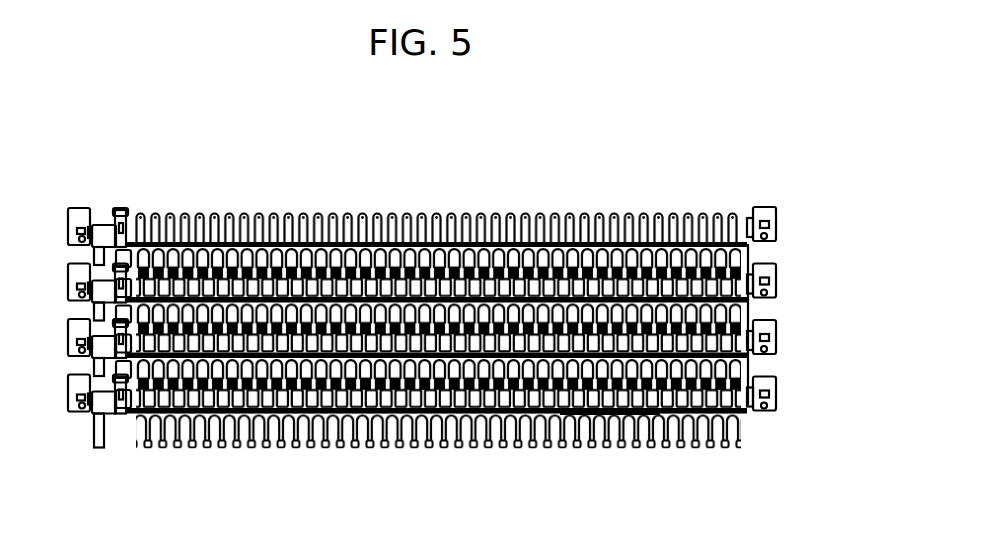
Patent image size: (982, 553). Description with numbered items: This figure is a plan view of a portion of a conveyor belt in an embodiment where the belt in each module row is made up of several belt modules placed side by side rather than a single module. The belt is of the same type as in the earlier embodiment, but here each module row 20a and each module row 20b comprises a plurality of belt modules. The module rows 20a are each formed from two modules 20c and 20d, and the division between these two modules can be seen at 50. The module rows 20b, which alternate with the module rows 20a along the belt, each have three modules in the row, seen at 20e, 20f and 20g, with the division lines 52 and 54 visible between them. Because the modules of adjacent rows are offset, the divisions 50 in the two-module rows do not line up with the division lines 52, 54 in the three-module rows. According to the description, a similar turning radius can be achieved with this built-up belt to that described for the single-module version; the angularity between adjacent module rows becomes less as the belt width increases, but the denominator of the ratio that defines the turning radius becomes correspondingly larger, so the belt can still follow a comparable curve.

The module row 20a is at (796, 229).
The module row 20b is at (779, 280).
The belt module 20c is at (338, 196).
The belt module 20d is at (600, 203).
The belt module 20e is at (192, 457).
The belt module 20f is at (436, 470).
The belt module 20g is at (653, 458).
The division 50 is at (427, 243).
The division line 52 is at (246, 432).
The division line 54 is at (602, 418).